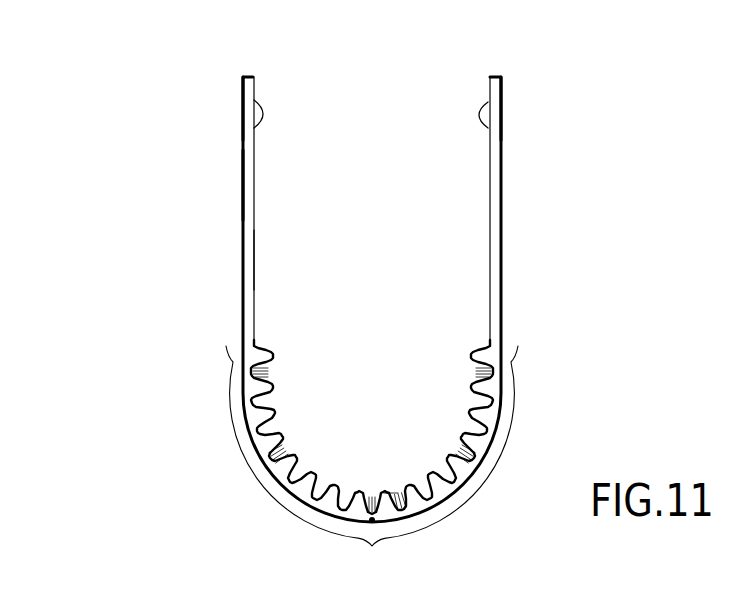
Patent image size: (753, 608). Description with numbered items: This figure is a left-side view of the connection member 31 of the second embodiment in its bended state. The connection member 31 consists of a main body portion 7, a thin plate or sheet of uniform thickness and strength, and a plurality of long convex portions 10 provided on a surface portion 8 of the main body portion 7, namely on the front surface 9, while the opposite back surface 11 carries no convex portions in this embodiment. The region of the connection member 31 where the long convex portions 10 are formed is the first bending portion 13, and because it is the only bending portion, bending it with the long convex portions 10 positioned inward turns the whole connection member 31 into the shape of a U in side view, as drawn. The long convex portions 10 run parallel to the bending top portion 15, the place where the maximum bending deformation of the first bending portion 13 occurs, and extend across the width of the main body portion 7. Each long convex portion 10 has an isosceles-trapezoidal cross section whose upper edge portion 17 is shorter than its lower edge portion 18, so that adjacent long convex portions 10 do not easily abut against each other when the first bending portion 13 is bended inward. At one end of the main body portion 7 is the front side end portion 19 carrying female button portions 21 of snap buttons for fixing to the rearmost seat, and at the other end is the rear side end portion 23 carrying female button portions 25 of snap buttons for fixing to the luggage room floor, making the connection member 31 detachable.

The connection member 31 is at (133, 110).
The main body portion 7 is at (247, 182).
The surface portion 8 is at (257, 236).
The front surface 9 is at (372, 208).
The long convex portion 10 is at (266, 385).
The back surface 11 is at (247, 258).
The first bending portion 13 is at (372, 464).
The bending top portion 15 is at (370, 518).
The upper edge portion 17 is at (407, 488).
The lower edge portion 18 is at (414, 503).
The front side end portion 19 is at (243, 110).
The female button portion 21 is at (262, 108).
The rear side end portion 23 is at (497, 105).
The female button portion 25 is at (481, 117).